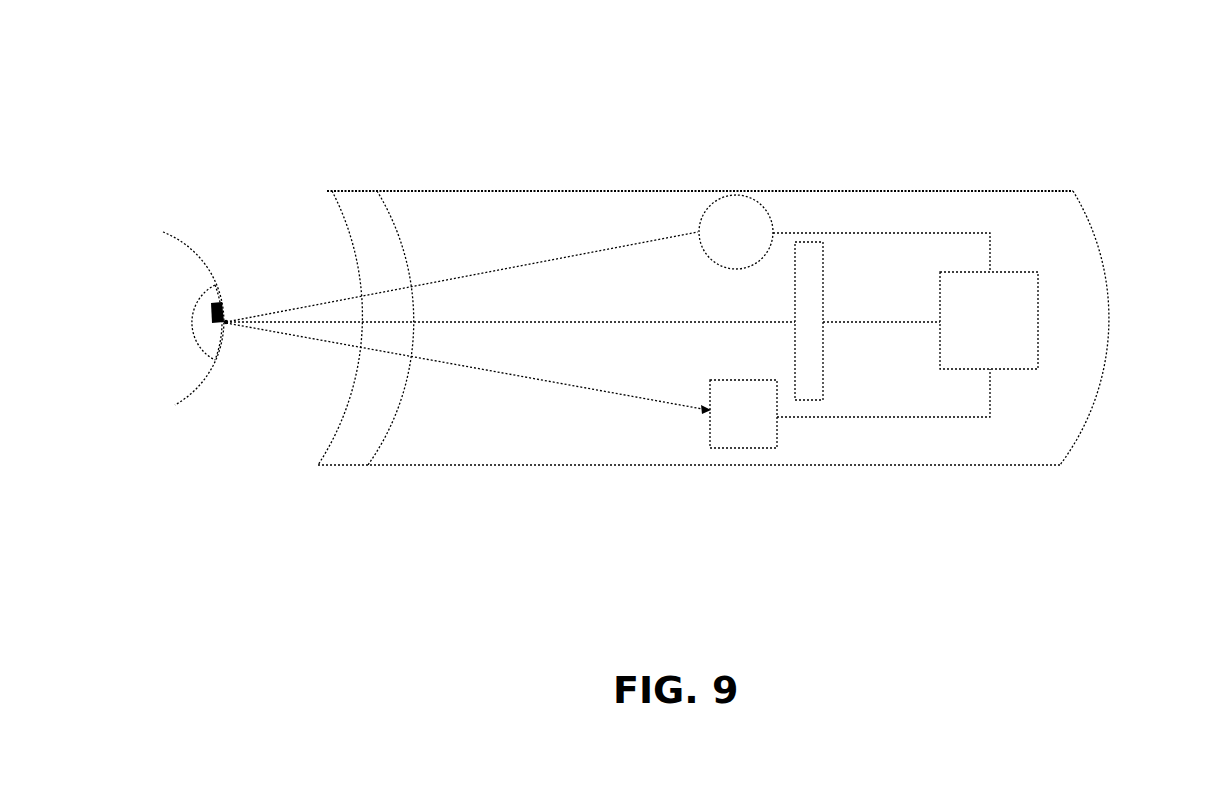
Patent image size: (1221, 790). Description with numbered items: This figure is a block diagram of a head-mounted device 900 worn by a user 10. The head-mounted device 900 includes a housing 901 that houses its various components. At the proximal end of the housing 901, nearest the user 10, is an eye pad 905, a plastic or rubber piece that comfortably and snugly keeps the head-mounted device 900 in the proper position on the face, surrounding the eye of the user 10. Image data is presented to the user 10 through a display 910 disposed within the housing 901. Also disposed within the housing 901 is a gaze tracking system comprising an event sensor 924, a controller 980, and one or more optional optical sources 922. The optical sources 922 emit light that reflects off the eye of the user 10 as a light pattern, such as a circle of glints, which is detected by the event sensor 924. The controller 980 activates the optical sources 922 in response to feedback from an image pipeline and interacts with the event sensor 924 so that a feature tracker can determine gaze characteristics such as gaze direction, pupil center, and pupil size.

The user 10 is at (186, 213).
The head-mounted device 900 is at (619, 72).
The housing 901 is at (873, 465).
The eye pad 905 is at (352, 191).
The display 910 is at (822, 303).
The optical source 922 is at (724, 195).
The event sensor 924 is at (740, 448).
The controller 980 is at (1038, 327).